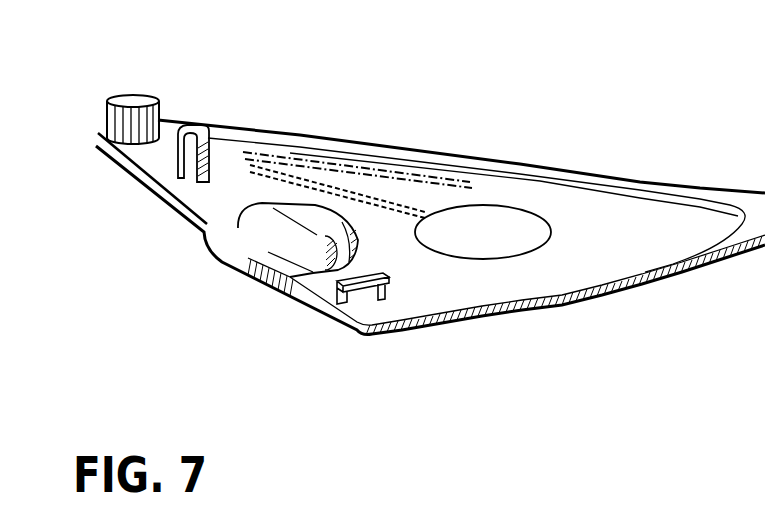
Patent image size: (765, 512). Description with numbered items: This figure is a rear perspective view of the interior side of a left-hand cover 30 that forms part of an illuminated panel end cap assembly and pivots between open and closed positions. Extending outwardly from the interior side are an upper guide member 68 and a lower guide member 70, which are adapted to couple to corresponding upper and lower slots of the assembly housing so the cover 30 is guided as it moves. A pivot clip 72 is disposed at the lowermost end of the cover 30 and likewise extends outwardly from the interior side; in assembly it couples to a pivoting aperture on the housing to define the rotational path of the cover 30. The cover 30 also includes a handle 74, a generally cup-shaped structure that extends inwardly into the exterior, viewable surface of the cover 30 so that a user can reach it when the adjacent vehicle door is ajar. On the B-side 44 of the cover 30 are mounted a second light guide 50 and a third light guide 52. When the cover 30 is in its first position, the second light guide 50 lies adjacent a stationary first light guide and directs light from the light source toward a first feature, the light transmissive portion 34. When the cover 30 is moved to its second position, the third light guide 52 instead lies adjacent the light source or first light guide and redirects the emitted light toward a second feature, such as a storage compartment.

The left-hand cover 30 is at (512, 280).
The light transmissive portion 34 is at (470, 243).
The B-side 44 is at (635, 245).
The second light guide 50 is at (366, 196).
The third light guide 52 is at (273, 150).
The upper guide member 68 is at (357, 292).
The lower guide member 70 is at (187, 168).
The pivot clip 72 is at (107, 118).
The handle 74 is at (280, 222).